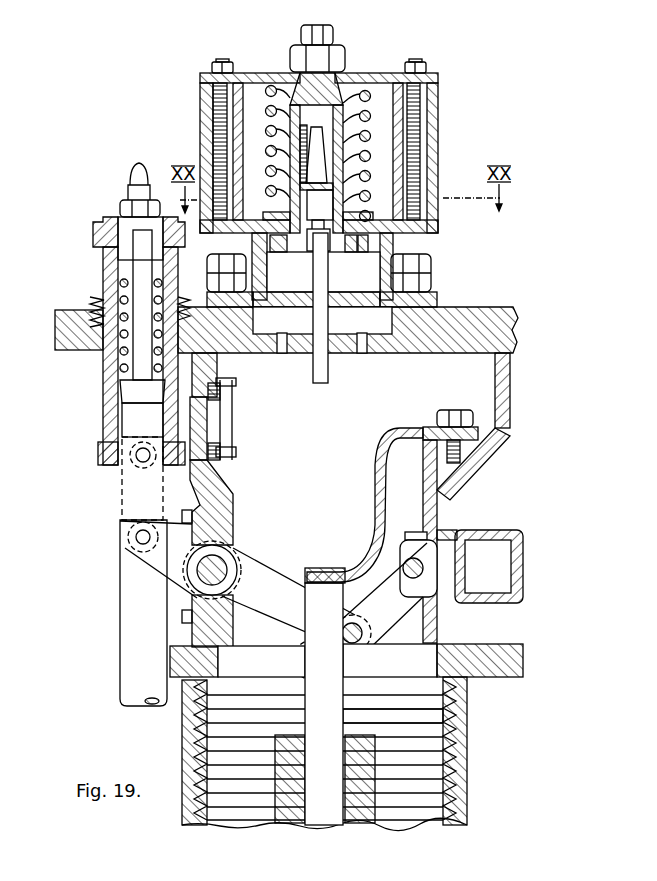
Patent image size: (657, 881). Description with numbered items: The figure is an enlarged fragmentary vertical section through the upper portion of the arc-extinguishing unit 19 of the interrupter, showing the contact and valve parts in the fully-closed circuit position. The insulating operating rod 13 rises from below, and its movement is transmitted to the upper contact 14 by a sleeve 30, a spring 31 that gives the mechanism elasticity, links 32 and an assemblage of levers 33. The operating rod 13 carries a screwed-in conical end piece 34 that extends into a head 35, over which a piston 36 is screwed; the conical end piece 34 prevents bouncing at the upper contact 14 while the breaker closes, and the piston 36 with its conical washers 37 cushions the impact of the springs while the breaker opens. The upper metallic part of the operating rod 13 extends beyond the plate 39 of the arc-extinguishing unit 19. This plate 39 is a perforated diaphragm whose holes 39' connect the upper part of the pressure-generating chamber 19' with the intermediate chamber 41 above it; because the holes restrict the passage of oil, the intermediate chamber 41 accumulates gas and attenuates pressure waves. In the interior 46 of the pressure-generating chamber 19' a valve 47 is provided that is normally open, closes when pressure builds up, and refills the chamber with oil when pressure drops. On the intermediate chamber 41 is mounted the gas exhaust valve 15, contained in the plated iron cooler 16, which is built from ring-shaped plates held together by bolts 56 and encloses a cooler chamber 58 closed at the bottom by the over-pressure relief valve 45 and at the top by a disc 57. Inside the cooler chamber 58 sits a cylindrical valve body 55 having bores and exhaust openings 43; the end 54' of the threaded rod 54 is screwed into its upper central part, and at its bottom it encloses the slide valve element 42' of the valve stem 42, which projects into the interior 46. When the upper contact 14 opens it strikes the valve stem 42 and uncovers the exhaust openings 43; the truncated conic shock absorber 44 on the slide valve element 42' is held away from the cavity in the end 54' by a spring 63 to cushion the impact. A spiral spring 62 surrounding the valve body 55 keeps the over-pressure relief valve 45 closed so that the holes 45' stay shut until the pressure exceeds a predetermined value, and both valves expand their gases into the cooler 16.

The insulating operating rod 13 is at (122, 678).
The upper contact 14 is at (325, 808).
The gas exhaust valve 15 is at (473, 115).
The plated iron cooler 16 is at (436, 175).
The arc-extinguishing unit 19 is at (346, 737).
The pressure-generating chamber 19' is at (426, 720).
The sleeve 30 is at (112, 387).
The spring 31 is at (118, 364).
The links 32 is at (122, 484).
The levers 33 is at (288, 558).
The conical end piece 34 is at (127, 424).
The head 35 is at (137, 180).
The piston 36 is at (128, 229).
The conical washers 37 is at (103, 296).
The plate 39 is at (286, 315).
The holes 39' is at (334, 355).
The intermediate chamber 41 is at (292, 287).
The valve stem 42 is at (322, 306).
The slide valve element 42' is at (351, 208).
The exhaust openings 43 is at (297, 245).
The shock absorber 44 is at (397, 164).
The over-pressure relief valve 45 is at (331, 270).
The holes 45' is at (352, 263).
The interior of pressure-generating chamber 46 is at (287, 498).
The valve 47 is at (233, 422).
The threaded rod 54 is at (329, 41).
The end of threaded rod 54' is at (335, 72).
The cylindrical valve body 55 is at (342, 105).
The bolts 56 is at (218, 97).
The disc 57 is at (282, 73).
The cooler chamber 58 is at (382, 130).
The spiral spring 62 is at (262, 120).
The spring 63 is at (300, 137).